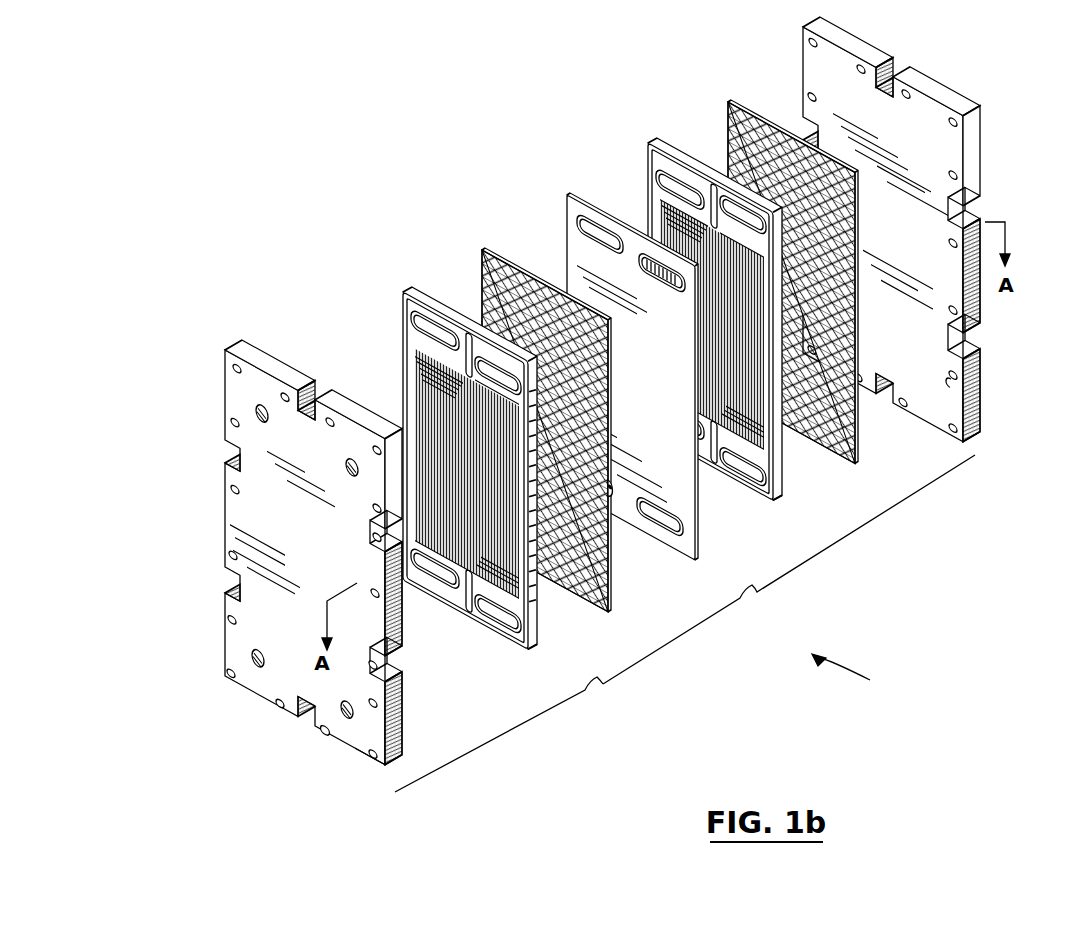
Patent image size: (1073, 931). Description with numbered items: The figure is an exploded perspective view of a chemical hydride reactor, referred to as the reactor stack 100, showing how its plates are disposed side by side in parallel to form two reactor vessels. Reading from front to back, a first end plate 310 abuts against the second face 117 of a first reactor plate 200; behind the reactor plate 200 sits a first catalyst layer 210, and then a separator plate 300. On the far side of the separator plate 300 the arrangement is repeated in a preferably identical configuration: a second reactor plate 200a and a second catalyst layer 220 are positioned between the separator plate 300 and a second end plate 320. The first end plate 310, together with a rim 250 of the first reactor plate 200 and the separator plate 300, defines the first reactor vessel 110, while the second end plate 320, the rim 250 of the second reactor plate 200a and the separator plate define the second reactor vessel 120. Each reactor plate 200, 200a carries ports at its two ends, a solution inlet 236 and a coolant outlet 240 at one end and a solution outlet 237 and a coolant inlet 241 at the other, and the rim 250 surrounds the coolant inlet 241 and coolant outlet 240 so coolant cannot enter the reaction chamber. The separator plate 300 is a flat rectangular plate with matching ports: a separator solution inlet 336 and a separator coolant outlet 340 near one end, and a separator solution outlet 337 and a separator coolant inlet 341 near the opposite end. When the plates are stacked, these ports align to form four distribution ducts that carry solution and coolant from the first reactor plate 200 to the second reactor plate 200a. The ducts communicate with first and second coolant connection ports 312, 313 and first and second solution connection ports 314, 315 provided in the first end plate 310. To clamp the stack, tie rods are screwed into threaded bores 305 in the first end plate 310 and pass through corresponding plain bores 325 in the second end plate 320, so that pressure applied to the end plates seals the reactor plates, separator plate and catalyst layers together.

The reactor stack 100 is at (867, 675).
The first reactor vessel 110 is at (515, 734).
The second face 117 is at (420, 405).
The second reactor vessel 120 is at (789, 569).
The first reactor plate 200 is at (409, 291).
The second reactor plate 200a is at (656, 143).
The first catalyst layer 210 is at (486, 252).
The second catalyst layer 220 is at (757, 113).
The solution inlet 236 is at (492, 630).
The solution outlet 237 is at (447, 316).
The coolant outlet 240 is at (456, 584).
The coolant inlet 241 is at (470, 332).
The rim 250 is at (530, 660).
The separator plate 300 is at (582, 208).
The threaded bores 305 is at (370, 763).
The first end plate 310 is at (250, 380).
The first coolant connection port 312 is at (344, 466).
The second coolant connection port 313 is at (256, 670).
The first solution connection port 314 is at (323, 736).
The second solution connection port 315 is at (256, 412).
The second end plate 320 is at (950, 100).
The plain bores 325 is at (948, 384).
The separator solution inlet 336 is at (658, 514).
The separator solution outlet 337 is at (637, 270).
The separator coolant outlet 340 is at (613, 487).
The separator coolant inlet 341 is at (578, 240).